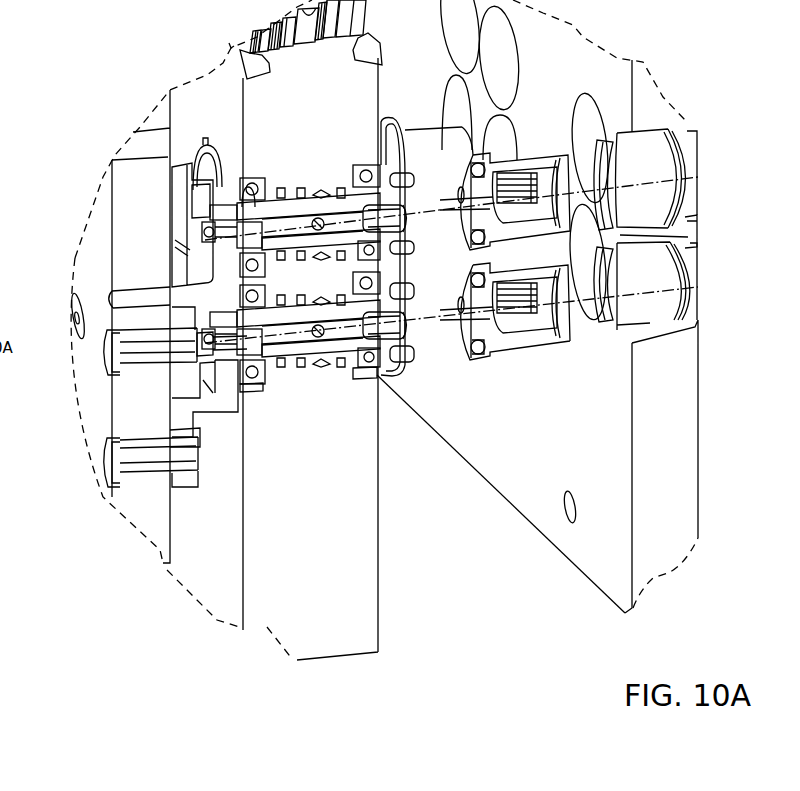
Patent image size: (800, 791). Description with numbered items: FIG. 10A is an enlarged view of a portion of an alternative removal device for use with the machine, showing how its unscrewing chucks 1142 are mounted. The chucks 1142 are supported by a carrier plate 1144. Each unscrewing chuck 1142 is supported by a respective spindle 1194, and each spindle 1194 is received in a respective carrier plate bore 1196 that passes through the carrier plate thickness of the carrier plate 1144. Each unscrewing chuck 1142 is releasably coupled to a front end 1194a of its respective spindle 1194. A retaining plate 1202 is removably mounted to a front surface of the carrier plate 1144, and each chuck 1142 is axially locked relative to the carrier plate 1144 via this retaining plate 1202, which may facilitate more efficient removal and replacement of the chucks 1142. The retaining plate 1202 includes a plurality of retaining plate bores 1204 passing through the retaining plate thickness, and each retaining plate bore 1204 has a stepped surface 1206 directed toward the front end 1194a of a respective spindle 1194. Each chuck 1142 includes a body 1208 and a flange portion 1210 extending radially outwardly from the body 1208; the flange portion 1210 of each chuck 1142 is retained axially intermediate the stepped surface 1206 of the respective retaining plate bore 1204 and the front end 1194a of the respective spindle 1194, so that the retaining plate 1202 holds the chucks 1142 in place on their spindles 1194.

The carrier plate 1144 is at (360, 612).
The carrier plate bore 1196 is at (369, 37).
The spindle 1194 is at (290, 353).
The front end 1194a is at (412, 381).
The unscrewing chuck 1142 is at (555, 337).
The flange portion 1210 is at (481, 150).
The body 1208 is at (521, 160).
The retaining plate bore 1204 is at (646, 331).
The stepped surface 1206 is at (667, 210).
The retaining plate 1202 is at (682, 472).